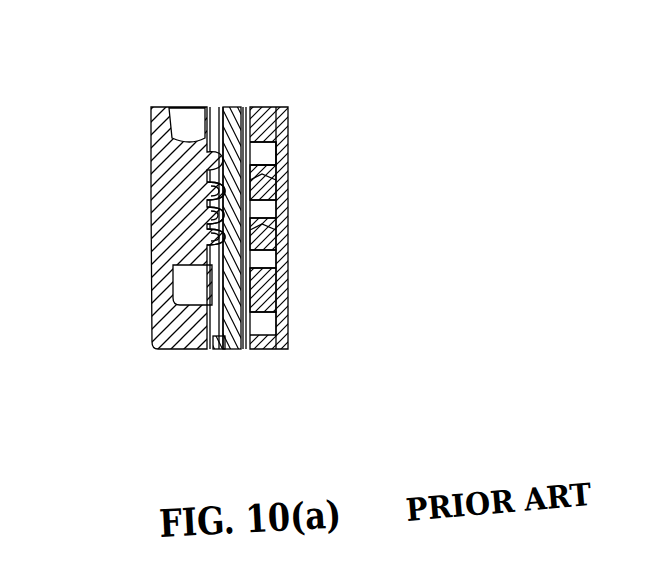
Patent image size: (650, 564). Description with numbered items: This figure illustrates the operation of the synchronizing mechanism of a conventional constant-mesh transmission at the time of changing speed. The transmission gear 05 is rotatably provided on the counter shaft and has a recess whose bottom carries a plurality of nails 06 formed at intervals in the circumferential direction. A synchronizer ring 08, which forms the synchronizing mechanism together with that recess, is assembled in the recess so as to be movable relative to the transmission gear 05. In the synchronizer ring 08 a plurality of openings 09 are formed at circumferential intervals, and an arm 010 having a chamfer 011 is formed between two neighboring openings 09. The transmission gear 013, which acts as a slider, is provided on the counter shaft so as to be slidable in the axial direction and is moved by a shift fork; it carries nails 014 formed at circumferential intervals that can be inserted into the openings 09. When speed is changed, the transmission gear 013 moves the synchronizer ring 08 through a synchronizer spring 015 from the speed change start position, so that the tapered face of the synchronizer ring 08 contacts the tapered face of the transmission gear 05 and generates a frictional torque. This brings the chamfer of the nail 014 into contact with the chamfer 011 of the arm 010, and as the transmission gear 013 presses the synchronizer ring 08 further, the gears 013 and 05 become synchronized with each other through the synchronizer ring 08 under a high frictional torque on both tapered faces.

The transmission gear 05 is at (286, 116).
The nails 06 is at (283, 217).
The synchronizer ring 08 is at (283, 280).
The openings 09 is at (285, 141).
The arm 010 is at (233, 107).
The chamfer 011 is at (207, 152).
The transmission gear (slider) 013 is at (157, 327).
The nails 014 is at (222, 238).
The synchronizer spring 015 is at (223, 352).